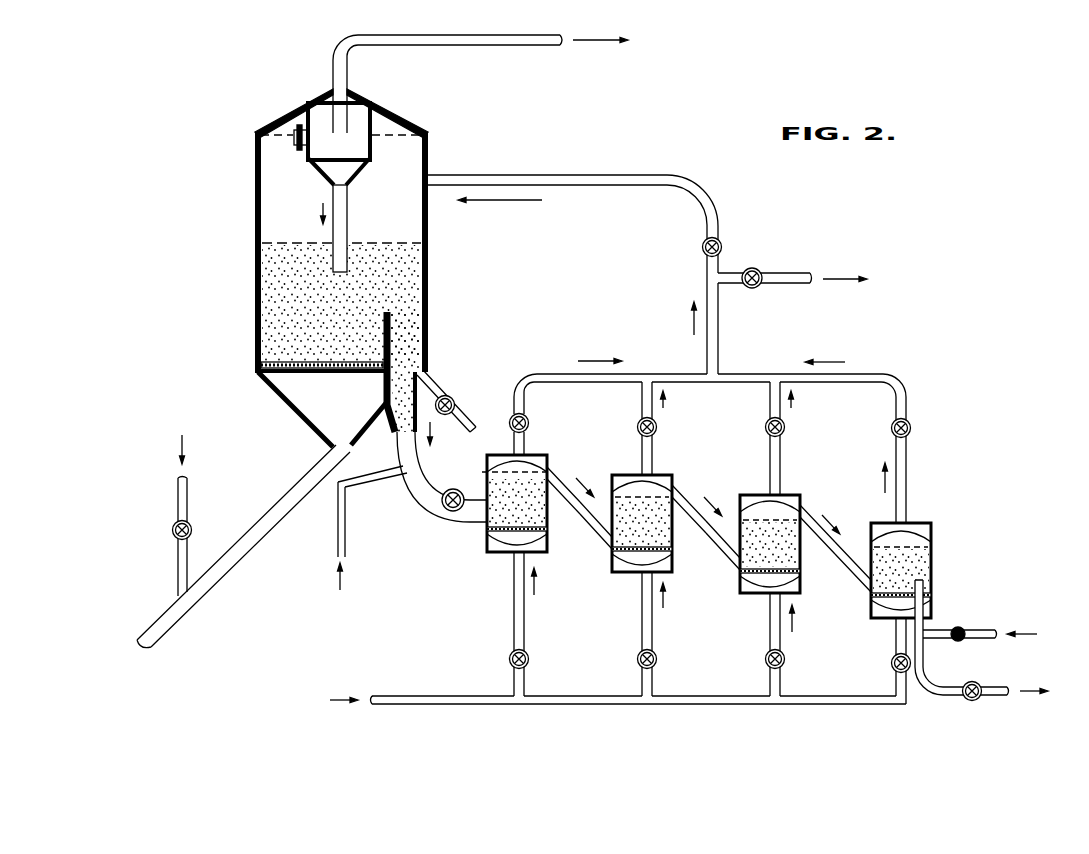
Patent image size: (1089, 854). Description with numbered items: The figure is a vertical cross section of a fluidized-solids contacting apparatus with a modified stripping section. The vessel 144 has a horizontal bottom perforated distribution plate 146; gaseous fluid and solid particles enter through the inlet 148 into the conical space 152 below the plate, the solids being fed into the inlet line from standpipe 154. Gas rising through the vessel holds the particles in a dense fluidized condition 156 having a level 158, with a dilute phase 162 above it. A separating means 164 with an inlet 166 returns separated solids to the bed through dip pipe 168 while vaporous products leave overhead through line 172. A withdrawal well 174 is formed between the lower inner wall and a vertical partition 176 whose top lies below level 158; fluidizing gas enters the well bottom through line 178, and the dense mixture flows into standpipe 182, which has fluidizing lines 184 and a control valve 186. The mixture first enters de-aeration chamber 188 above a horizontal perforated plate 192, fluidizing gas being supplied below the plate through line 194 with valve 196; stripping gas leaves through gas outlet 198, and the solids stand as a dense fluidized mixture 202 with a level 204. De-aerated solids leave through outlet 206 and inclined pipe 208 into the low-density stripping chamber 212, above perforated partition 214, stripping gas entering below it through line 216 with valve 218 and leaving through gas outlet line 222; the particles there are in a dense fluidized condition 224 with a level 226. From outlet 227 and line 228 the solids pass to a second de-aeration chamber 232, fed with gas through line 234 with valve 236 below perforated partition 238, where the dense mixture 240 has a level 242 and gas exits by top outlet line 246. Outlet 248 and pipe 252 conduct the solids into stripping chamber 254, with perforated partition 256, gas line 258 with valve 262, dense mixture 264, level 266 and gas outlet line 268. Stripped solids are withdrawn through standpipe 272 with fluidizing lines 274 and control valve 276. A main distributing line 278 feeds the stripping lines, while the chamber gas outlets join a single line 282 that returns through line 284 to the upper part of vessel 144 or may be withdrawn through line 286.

The vessel 144 is at (254, 145).
The distribution plate 146 is at (290, 360).
The inlet 148 is at (233, 563).
The conical space 152 is at (310, 398).
The standpipe 154 is at (176, 499).
The dense fluidized condition 156 is at (278, 284).
The level 158 is at (287, 243).
The dilute phase 162 is at (268, 173).
The separating means 164 is at (392, 114).
The inlet 166 is at (295, 127).
The dip pipe 168 is at (347, 212).
The line 172 is at (499, 44).
The withdrawal well 174 is at (410, 340).
The vertical partition 176 is at (390, 328).
The line 178 is at (428, 380).
The standpipe 182 is at (423, 488).
The fluidizing lines 184 is at (347, 540).
The control valve 186 is at (455, 510).
The de-aeration chamber 188 is at (527, 455).
The perforated plate 192 is at (505, 530).
The line 194 is at (513, 620).
The valve 196 is at (510, 661).
The gas outlet 198 is at (512, 386).
The dense fluidized mixture 202 is at (495, 495).
The level 204 is at (498, 458).
The outlet 206 is at (545, 470).
The inclined pipe 208 is at (592, 515).
The stripping chamber 212 is at (656, 475).
The perforated partition 214 is at (618, 560).
The line 216 is at (642, 621).
The valve 218 is at (640, 661).
The gas outlet line 222 is at (642, 405).
The dense fluidized condition 224 is at (653, 532).
The level 226 is at (624, 497).
The outlet 227 is at (673, 488).
The line 228 is at (727, 549).
The de-aeration chamber 232 is at (783, 494).
The line 234 is at (770, 624).
The valve 236 is at (765, 661).
The perforated partition 238 is at (748, 571).
The dense mixture 240 is at (790, 520).
The level 242 is at (743, 511).
The top outlet line 246 is at (770, 404).
The outlet 248 is at (812, 520).
The pipe 252 is at (856, 564).
The stripping chamber 254 is at (932, 532).
The perforated partition 256 is at (870, 594).
The line 258 is at (897, 634).
The valve 262 is at (890, 664).
The dense mixture 264 is at (918, 565).
The level 266 is at (906, 541).
The line 268 is at (908, 454).
The standpipe 272 is at (920, 612).
The fluidizing lines 274 is at (957, 639).
The control valve 276 is at (975, 702).
The distributing line 278 is at (720, 706).
The line 282 is at (880, 378).
The line 284 is at (707, 341).
The line 286 is at (777, 273).